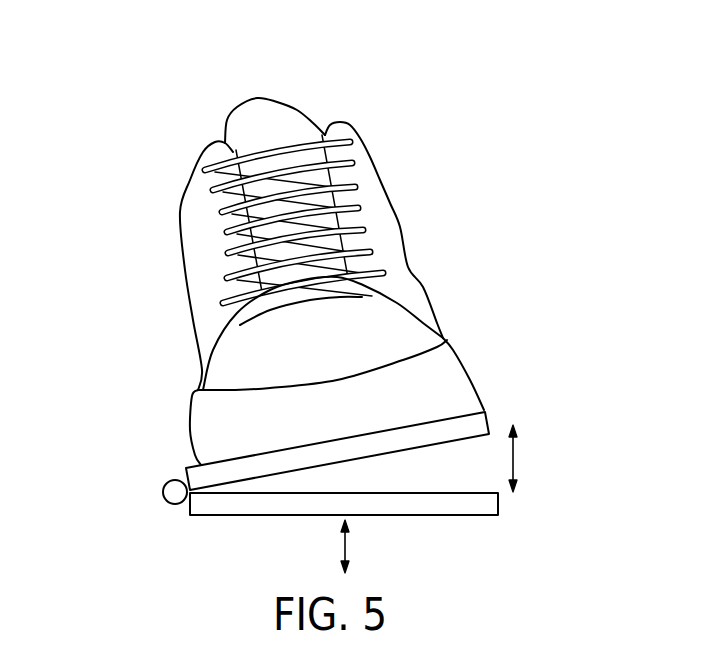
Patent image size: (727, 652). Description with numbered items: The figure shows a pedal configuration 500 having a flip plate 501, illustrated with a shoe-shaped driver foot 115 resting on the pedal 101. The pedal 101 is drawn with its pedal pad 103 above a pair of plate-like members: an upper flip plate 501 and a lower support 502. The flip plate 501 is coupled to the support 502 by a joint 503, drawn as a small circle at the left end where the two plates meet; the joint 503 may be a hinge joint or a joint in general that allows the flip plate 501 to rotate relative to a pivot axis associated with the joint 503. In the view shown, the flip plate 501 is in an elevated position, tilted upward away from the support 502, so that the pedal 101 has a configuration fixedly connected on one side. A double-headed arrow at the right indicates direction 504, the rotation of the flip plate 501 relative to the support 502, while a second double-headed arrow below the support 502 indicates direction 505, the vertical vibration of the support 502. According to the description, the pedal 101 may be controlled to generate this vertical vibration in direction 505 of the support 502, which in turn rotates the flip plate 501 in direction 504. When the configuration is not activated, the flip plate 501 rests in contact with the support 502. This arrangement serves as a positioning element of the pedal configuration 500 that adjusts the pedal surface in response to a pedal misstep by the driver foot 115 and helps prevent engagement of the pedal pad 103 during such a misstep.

The pedal configuration 500 is at (332, 303).
The pedal 101 is at (300, 281).
The driver foot 115 is at (375, 313).
The pedal pad 103 is at (484, 410).
The flip plate 501 is at (492, 423).
The support 502 is at (498, 502).
The joint 503 is at (163, 492).
The direction 504 is at (514, 465).
The direction 505 is at (344, 542).